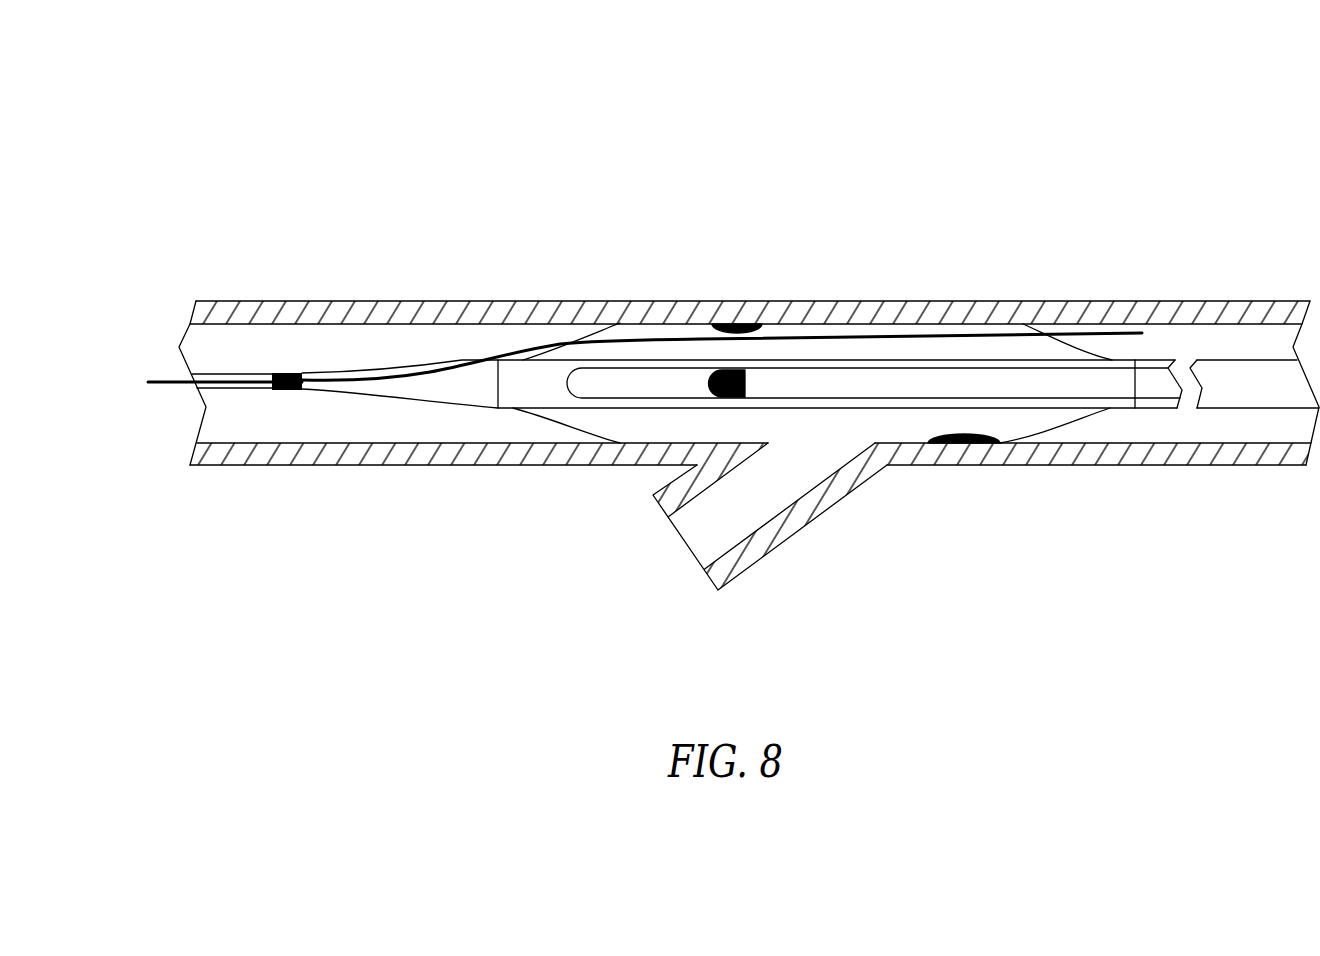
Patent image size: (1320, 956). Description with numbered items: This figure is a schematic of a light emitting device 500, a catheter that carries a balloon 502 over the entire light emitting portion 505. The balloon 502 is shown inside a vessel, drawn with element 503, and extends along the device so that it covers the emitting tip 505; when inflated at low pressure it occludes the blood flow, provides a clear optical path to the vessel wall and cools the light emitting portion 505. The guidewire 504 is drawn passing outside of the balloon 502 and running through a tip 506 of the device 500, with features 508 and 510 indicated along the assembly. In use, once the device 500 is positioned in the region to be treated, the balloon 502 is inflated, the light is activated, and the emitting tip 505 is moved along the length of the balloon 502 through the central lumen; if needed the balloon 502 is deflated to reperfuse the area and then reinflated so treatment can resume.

The light emitting device 500 is at (257, 122).
The balloon 502 is at (580, 331).
The blood vessel 503 is at (850, 301).
The guidewire 504 is at (1110, 332).
The light emitting portion 505 is at (527, 427).
The tip 506 is at (197, 381).
The expandable sheath 508 is at (656, 324).
The marker 510 is at (288, 373).